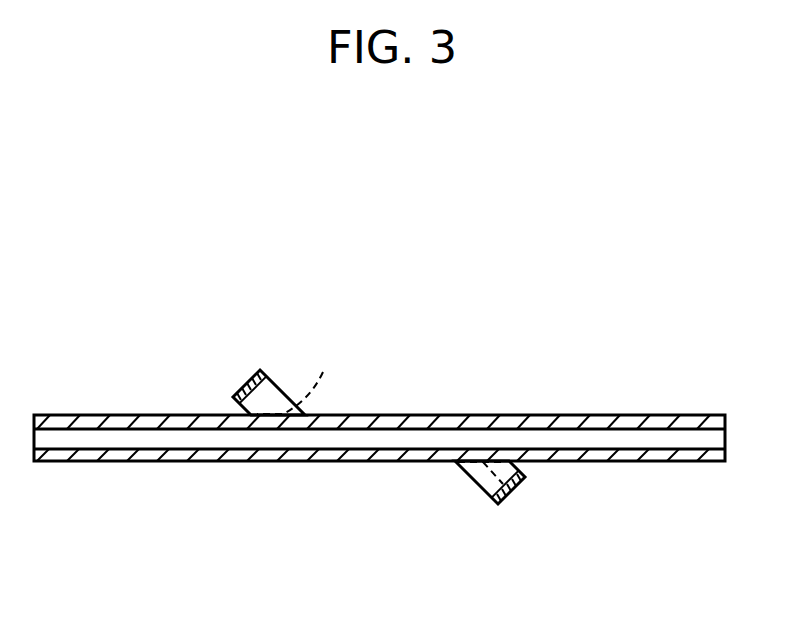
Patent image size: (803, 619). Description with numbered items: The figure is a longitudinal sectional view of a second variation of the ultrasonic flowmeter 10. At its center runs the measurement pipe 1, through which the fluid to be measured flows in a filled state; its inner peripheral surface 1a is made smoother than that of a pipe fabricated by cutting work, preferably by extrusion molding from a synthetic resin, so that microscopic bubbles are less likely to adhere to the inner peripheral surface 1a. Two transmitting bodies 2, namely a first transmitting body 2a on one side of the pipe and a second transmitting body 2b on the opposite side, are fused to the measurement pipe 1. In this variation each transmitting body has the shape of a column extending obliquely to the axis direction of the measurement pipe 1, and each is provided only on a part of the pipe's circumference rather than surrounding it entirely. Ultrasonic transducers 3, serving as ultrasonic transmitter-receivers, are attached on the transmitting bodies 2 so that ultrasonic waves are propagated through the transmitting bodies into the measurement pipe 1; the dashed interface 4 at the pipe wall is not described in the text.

The ultrasonic flowmeter 10 is at (543, 265).
The measurement pipe 1 is at (379, 450).
The inner peripheral surface 1a is at (554, 428).
The transmitting bodies 2 is at (384, 437).
The first transmitting body 2a is at (284, 395).
The second transmitting body 2b is at (482, 487).
The ultrasonic transducers 3 is at (257, 378).
The adhesive layer 4 is at (381, 413).